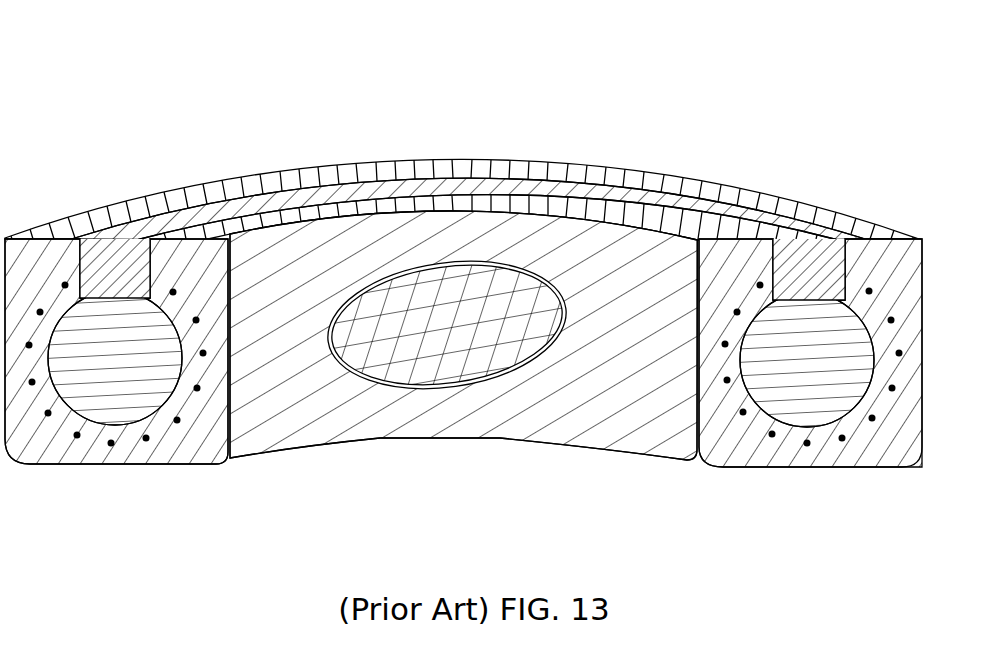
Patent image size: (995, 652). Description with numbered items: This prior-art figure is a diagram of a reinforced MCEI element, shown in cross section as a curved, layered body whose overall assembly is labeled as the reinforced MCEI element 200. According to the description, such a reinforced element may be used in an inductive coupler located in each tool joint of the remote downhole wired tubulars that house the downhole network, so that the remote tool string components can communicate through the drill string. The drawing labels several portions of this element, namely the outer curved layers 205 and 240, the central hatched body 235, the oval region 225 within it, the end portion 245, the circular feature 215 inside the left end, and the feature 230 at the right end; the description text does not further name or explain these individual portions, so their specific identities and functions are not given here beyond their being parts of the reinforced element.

The prior art cable assembly 200 is at (215, 101).
The outer jacket layer 205 is at (462, 136).
The armor layer 240 is at (468, 130).
The filler body 235 is at (463, 260).
The optical fiber bundle 225 is at (447, 217).
The end block 245 is at (116, 282).
The conductor 215 is at (137, 366).
The strength fiber 230 is at (788, 246).